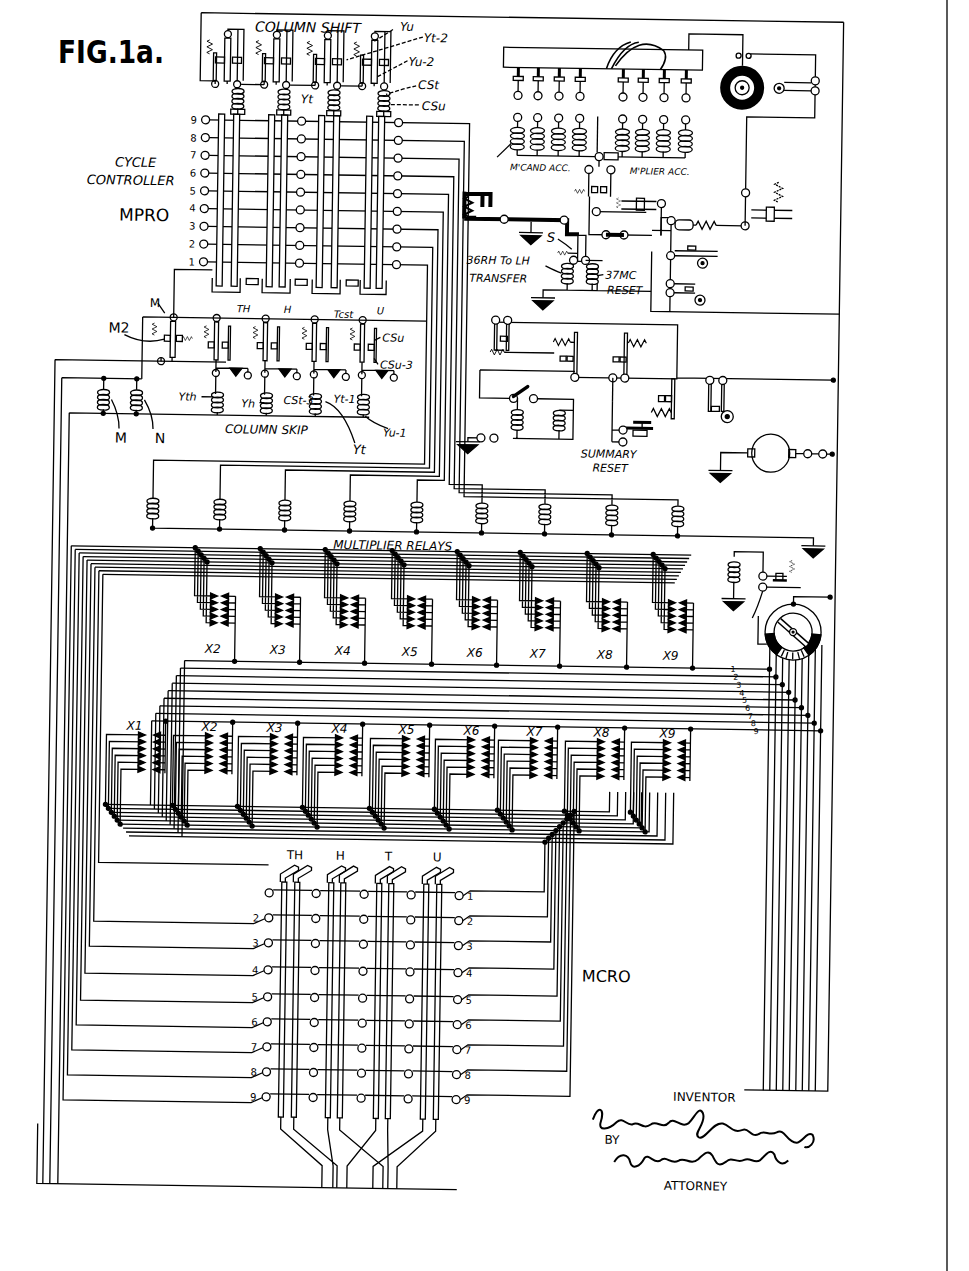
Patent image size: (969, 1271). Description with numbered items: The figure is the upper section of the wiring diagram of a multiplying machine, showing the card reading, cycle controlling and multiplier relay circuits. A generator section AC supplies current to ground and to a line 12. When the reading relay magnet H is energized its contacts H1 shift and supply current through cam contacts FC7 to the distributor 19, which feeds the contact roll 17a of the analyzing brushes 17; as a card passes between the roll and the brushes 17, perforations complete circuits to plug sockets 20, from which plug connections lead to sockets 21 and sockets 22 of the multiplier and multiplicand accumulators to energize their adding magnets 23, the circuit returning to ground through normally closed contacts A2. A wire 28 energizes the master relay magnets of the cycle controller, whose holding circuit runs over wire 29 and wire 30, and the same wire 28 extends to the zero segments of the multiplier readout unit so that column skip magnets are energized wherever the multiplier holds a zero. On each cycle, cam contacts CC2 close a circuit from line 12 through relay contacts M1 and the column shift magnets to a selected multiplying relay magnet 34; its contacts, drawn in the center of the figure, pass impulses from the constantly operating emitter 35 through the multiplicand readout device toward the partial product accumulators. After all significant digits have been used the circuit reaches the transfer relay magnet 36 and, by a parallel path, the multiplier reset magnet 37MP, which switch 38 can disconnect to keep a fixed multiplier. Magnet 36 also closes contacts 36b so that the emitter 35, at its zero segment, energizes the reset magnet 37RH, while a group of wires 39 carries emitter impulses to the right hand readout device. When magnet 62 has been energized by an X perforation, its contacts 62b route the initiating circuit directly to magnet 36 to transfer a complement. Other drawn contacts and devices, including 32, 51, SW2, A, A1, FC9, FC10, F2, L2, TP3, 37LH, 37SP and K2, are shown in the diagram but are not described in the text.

The line 12 is at (834, 343).
The analyzing brushes 17 is at (635, 52).
The contact roll 17a is at (530, 54).
The distributor 19 is at (729, 104).
The plug sockets 20 is at (508, 97).
The sockets of multiplier accumulator 21 is at (674, 116).
The sockets of multiplicand accumulator 22 is at (506, 117).
The adding magnets 23 is at (493, 153).
The wire 28 is at (83, 384).
The wire 29 is at (66, 463).
The wire 30 is at (72, 366).
The column shift relays 32 is at (245, 44).
The multiplying relay magnets 34 is at (418, 506).
The emitter 35 is at (768, 642).
The RH to LH transfer relay magnet 36 is at (800, 570).
The contacts 36b is at (746, 618).
The switch 38 is at (670, 228).
The group of wires 39 is at (785, 968).
The relay S 51 is at (572, 230).
The magnet 62 is at (470, 222).
The contacts 62b is at (482, 205).
The switch SW2 is at (601, 132).
The relay A is at (620, 198).
The contact A1 is at (650, 200).
The normally closed contacts A2 is at (582, 181).
The relay magnet H is at (780, 188).
The contacts H1 is at (786, 211).
The cam contacts FC7 is at (795, 76).
The cam contact FC9 is at (704, 262).
The cam contact FC10 is at (704, 288).
The multiplier reset magnet 37MP is at (722, 225).
The relay contacts M1 is at (489, 333).
The contact F2 is at (548, 340).
The contact L2 is at (624, 361).
The switch TP3 is at (526, 388).
The left hand reset magnet 37LH is at (509, 414).
The summary reset magnet 37SP is at (553, 432).
The contact K2 is at (654, 392).
The cam contacts CC2 is at (728, 397).
The AC generator section AC is at (771, 458).
The reset magnet 37RH is at (733, 570).